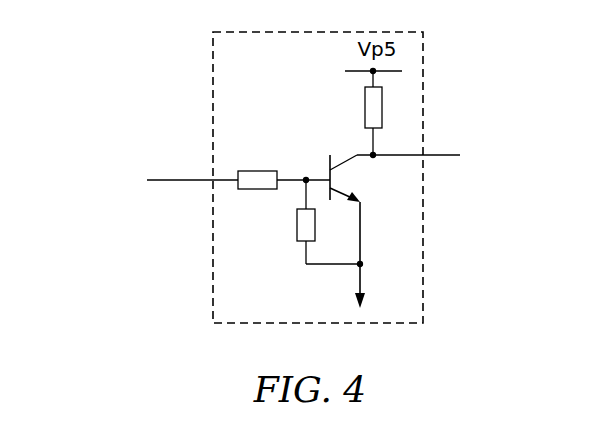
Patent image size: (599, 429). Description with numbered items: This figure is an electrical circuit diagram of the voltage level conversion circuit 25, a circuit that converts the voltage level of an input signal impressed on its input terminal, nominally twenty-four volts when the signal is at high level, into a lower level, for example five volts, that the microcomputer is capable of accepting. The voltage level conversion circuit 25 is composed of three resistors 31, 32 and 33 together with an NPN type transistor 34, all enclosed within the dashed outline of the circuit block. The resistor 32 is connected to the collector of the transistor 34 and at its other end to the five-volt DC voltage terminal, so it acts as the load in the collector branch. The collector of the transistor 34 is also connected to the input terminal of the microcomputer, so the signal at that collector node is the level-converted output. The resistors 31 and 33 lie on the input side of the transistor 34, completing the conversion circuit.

The voltage level conversion circuit 25 is at (213, 75).
The resistor 31 is at (259, 171).
The resistor 32 is at (382, 107).
The resistor 33 is at (297, 226).
The NPN type transistor 34 is at (345, 156).